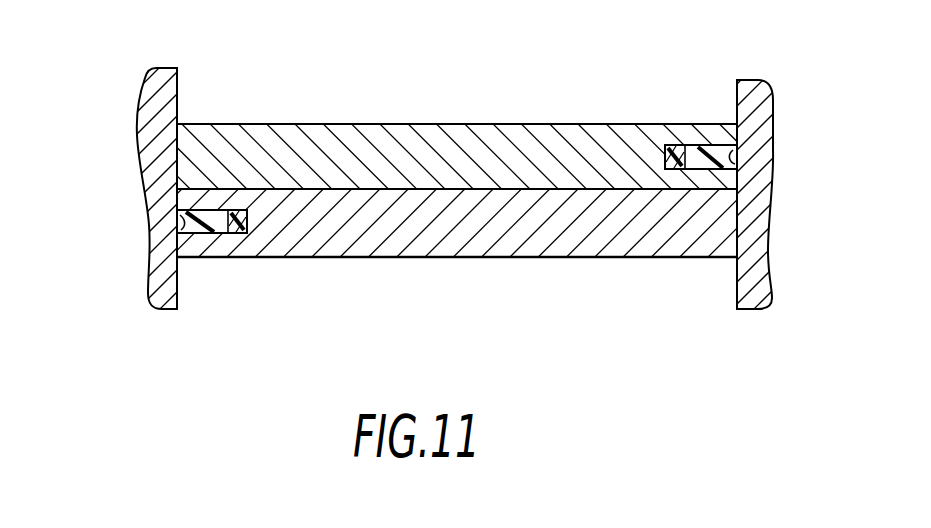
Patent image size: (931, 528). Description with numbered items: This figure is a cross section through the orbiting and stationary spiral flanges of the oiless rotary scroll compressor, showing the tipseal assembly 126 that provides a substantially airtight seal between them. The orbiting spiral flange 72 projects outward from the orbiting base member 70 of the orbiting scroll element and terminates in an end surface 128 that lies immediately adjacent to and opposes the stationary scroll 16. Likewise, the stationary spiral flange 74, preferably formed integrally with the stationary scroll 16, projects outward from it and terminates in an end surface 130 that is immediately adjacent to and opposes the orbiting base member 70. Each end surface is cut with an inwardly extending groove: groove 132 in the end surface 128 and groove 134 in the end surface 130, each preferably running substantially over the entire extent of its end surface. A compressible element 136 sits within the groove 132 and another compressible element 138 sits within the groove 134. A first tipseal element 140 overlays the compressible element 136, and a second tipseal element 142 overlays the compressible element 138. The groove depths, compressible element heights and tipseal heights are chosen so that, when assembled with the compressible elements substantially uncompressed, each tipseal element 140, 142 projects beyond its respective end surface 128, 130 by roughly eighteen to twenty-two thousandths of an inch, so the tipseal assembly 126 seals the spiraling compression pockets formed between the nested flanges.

The stationary scroll 16 is at (778, 266).
The orbiting base member 70 is at (146, 95).
The orbiting spiral flange 72 is at (423, 122).
The stationary spiral flange 74 is at (492, 260).
The tipseal assembly 126 is at (698, 119).
The end surface 128 is at (739, 138).
The end surface 130 is at (179, 238).
The groove 132 is at (726, 153).
The groove 134 is at (186, 232).
The compressible element 136 is at (672, 151).
The compressible element 138 is at (247, 232).
The first tipseal element 140 is at (705, 164).
The second tipseal element 142 is at (212, 209).